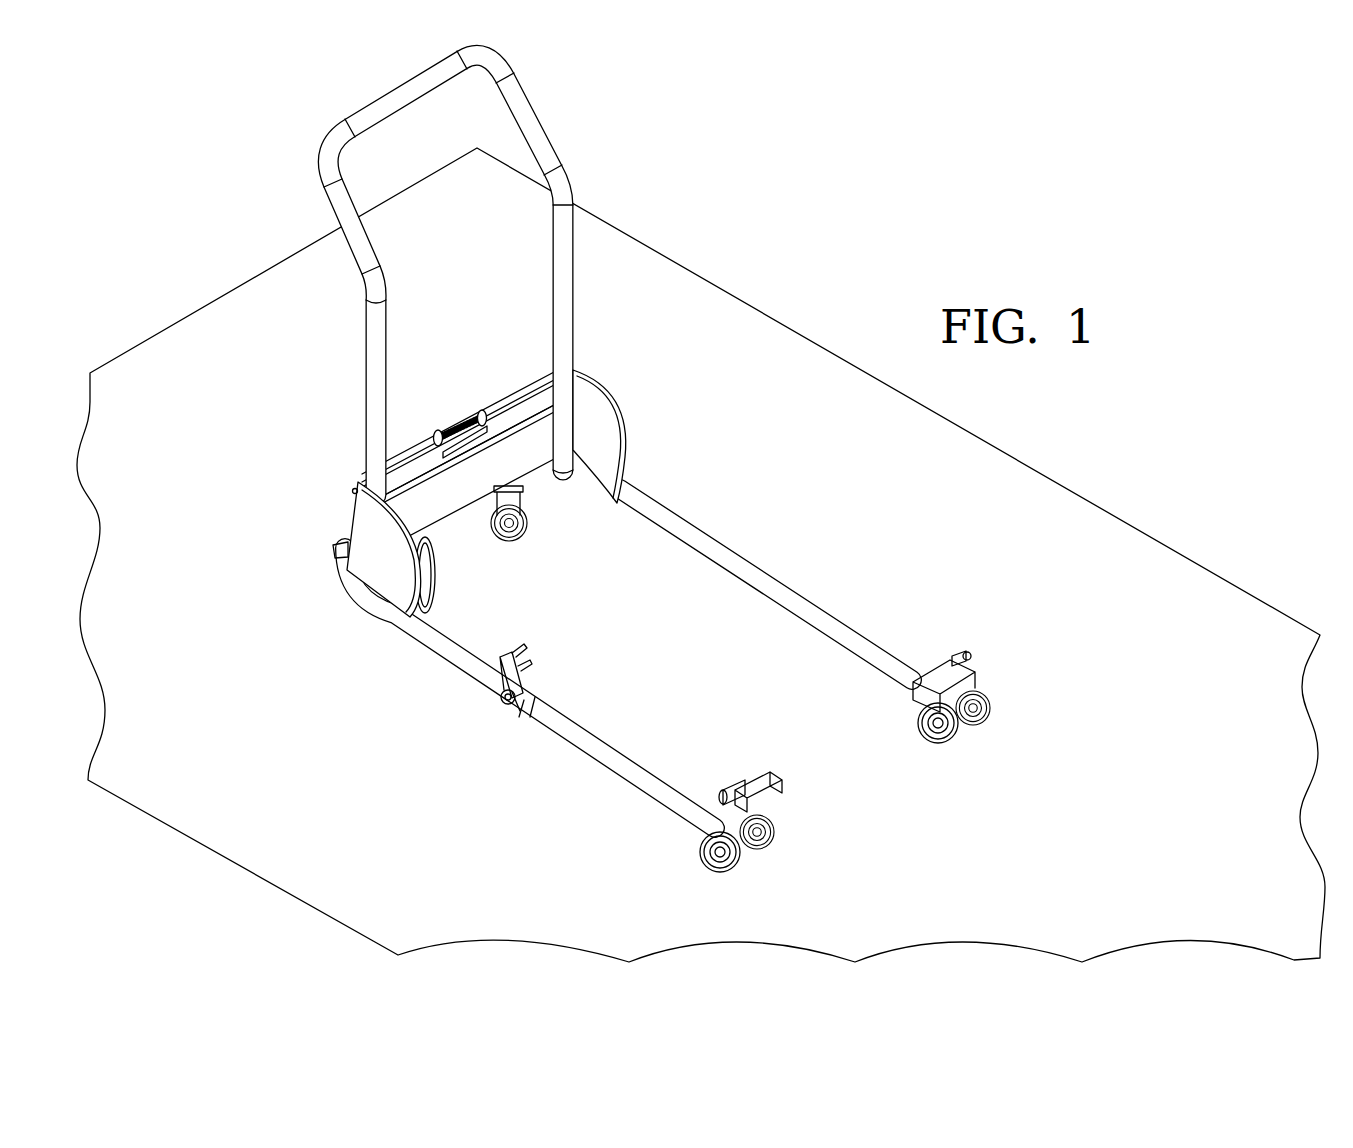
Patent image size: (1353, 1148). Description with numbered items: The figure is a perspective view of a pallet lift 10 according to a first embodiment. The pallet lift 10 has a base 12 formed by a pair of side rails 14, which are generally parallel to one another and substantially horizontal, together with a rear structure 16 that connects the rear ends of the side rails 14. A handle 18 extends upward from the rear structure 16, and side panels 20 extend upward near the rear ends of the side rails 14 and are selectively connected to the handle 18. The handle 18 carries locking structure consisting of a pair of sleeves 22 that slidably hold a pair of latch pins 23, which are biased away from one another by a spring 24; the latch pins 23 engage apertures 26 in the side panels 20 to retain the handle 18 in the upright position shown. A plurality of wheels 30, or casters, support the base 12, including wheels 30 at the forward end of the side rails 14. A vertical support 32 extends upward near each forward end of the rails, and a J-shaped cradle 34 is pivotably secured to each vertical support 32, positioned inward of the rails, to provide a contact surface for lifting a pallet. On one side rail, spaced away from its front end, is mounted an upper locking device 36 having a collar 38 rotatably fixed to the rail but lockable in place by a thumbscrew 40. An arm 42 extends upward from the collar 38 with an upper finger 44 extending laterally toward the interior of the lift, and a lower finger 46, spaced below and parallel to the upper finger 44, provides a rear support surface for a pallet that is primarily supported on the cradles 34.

The pallet lift 10 is at (262, 228).
The base 12 is at (622, 477).
The side rails 14 is at (710, 535).
The rear structure 16 is at (450, 525).
The handle 18 is at (548, 125).
The side panels 20 is at (612, 415).
The sleeves 22 is at (518, 390).
The latch pins 23 is at (350, 497).
The spring 24 is at (455, 422).
The apertures 26 is at (352, 487).
The wheels 30 is at (425, 618).
The vertical support 32 is at (720, 795).
The J-shaped cradle 34 is at (760, 780).
The upper locking device 36 is at (512, 655).
The collar 38 is at (522, 720).
The thumbscrew 40 is at (507, 707).
The arm 42 is at (505, 697).
The upper finger 44 is at (520, 650).
The lower finger 46 is at (530, 665).